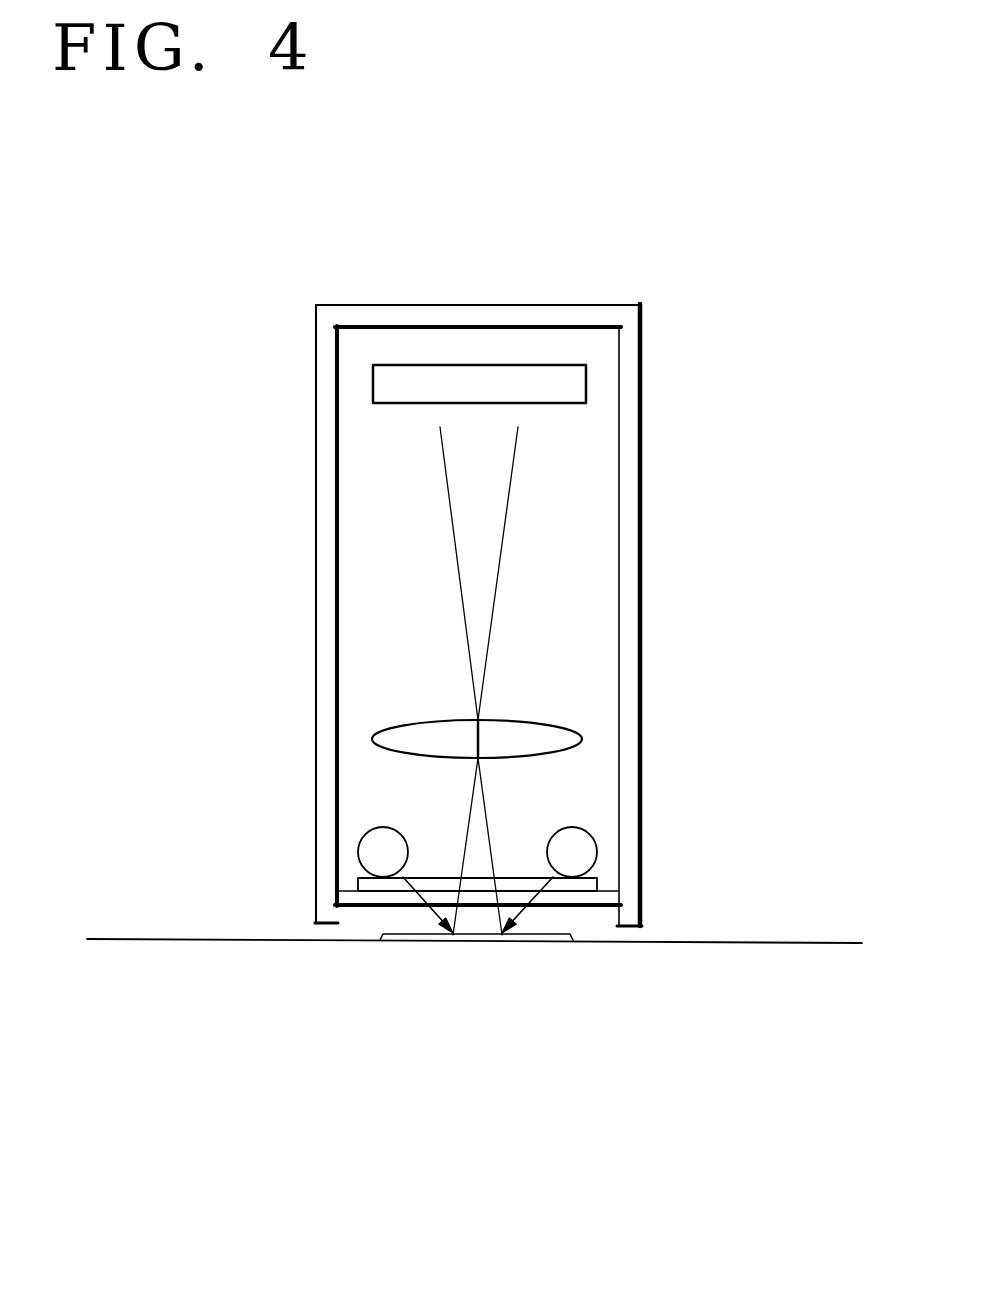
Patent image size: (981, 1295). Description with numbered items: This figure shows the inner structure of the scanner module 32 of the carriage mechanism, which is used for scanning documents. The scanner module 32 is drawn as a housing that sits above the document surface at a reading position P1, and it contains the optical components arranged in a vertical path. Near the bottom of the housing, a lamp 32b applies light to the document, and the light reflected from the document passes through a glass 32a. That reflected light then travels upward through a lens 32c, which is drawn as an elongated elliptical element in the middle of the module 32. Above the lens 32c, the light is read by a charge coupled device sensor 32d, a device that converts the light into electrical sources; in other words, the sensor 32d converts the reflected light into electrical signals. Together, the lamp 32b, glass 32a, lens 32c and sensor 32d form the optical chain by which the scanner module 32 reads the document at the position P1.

The scanner module 32 is at (622, 305).
The charge coupled device (CCD) sensor 32d is at (588, 380).
The lens 32c is at (580, 730).
The lamp 32b is at (360, 844).
The glass 32a is at (597, 878).
The reading position / target P1 is at (543, 940).